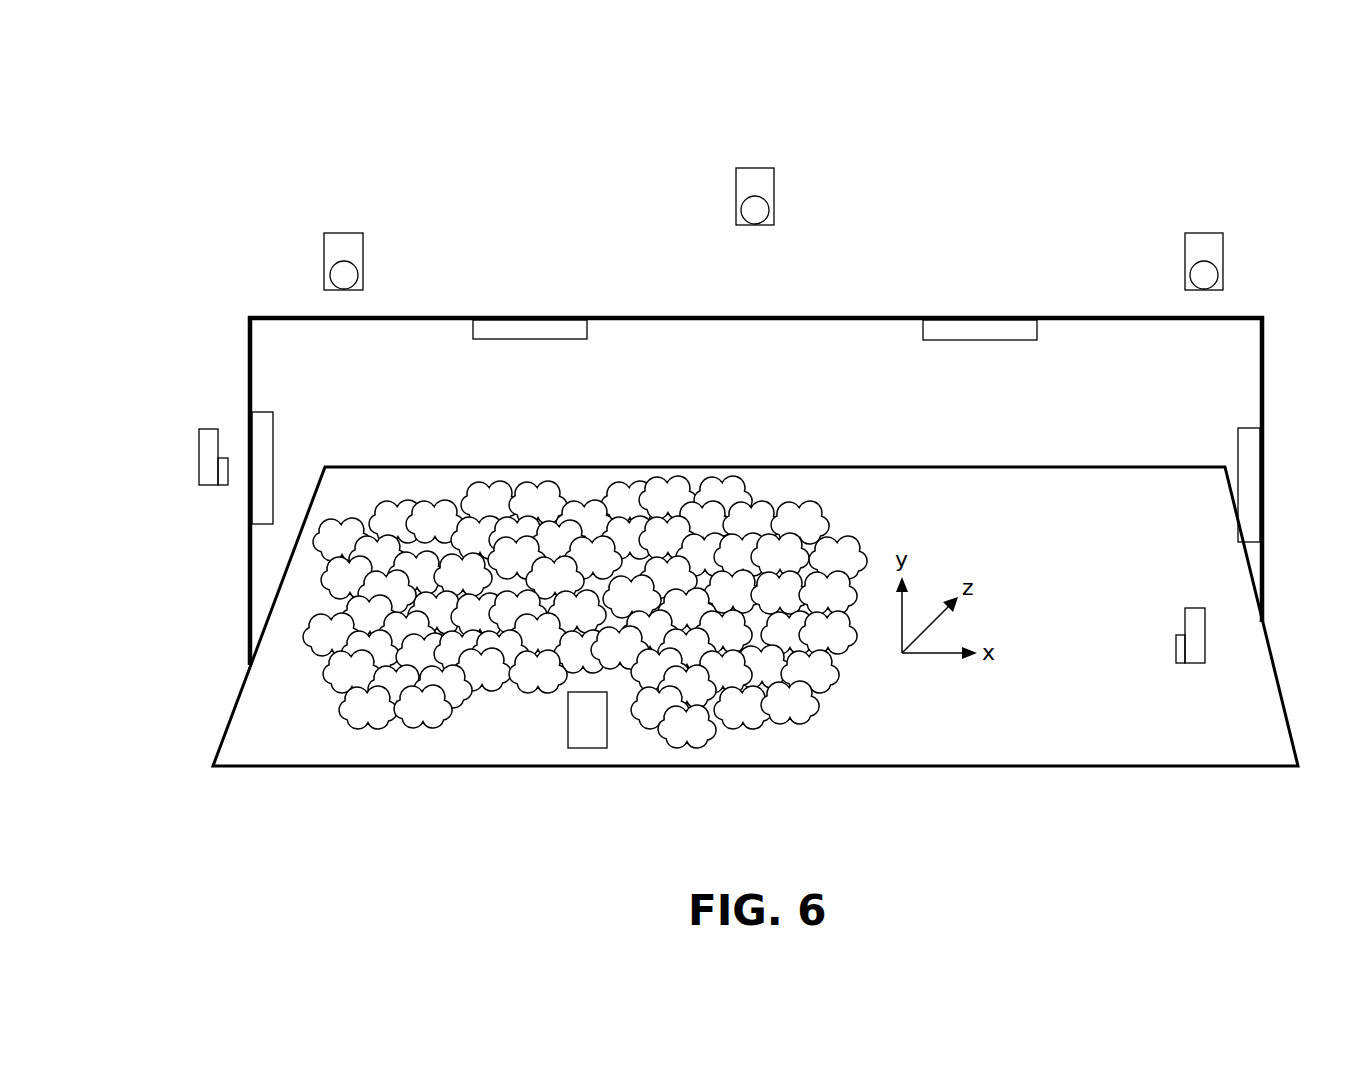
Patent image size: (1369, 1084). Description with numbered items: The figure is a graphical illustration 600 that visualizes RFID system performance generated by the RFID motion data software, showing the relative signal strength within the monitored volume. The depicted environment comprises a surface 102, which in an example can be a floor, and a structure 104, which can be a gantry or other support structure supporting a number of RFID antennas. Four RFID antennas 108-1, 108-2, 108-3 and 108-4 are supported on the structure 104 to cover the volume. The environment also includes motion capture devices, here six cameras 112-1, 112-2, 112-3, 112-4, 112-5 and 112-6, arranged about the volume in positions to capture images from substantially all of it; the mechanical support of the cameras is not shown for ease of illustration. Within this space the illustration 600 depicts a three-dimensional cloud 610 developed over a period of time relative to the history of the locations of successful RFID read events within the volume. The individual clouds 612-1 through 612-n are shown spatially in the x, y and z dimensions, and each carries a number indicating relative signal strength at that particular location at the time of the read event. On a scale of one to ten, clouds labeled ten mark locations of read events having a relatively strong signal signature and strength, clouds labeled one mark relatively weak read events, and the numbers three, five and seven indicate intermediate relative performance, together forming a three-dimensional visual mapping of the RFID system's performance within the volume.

The graphical illustration 600 is at (197, 112).
The surface 102 is at (280, 754).
The structure 104 is at (250, 578).
The RFID antenna 108-1 is at (1252, 428).
The RFID antenna 108-2 is at (1038, 323).
The RFID antenna 108-3 is at (589, 323).
The RFID antenna 108-4 is at (267, 412).
The camera 112-1 is at (568, 718).
The camera 112-2 is at (197, 458).
The camera 112-3 is at (344, 233).
The camera 112-4 is at (756, 168).
The camera 112-5 is at (1204, 233).
The camera 112-6 is at (1232, 645).
The three-dimensional cloud 610 is at (630, 613).
The individual cloud 612-1 is at (472, 492).
The individual cloud 612-n is at (800, 722).